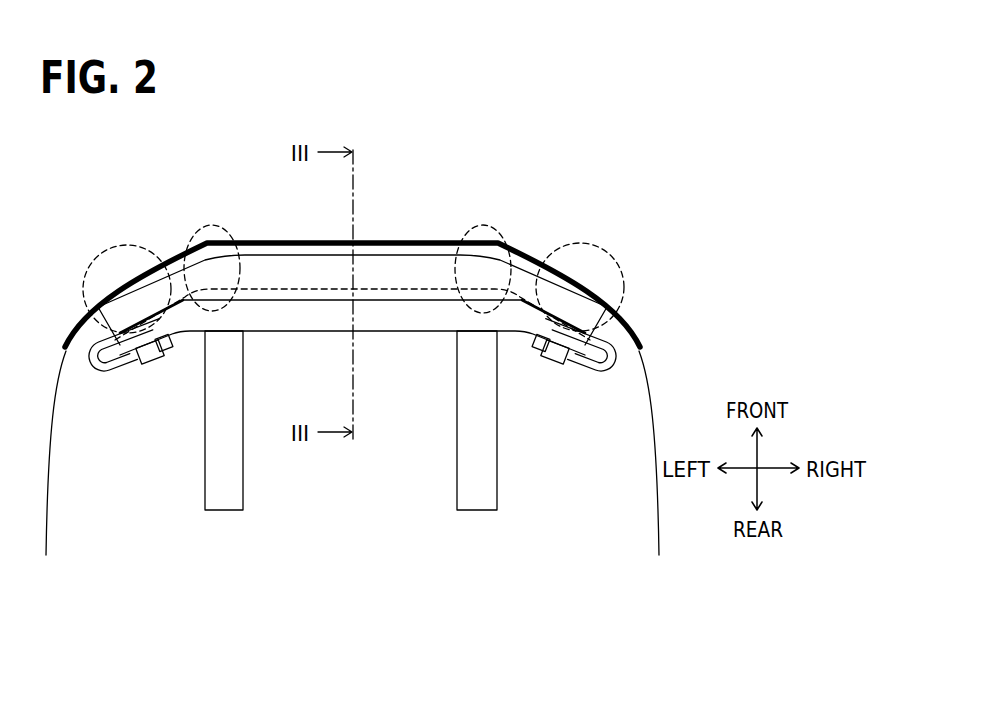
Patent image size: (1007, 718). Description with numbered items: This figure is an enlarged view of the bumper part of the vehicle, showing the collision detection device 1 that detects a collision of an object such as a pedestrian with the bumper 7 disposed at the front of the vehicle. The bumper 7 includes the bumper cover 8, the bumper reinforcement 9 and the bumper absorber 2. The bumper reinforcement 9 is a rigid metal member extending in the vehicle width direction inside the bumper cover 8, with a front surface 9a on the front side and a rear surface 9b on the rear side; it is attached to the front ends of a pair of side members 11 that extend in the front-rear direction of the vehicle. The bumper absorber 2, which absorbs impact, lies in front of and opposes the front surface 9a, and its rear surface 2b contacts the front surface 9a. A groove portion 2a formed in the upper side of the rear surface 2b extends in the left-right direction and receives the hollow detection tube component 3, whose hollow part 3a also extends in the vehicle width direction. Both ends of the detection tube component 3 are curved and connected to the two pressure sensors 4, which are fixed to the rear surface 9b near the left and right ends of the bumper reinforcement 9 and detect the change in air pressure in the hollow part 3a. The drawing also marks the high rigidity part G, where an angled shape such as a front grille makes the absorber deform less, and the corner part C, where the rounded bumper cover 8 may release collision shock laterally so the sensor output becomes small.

The collision detection device 1 is at (711, 247).
The bumper absorber 2 is at (352, 296).
The groove portion 2a is at (433, 333).
The rear surface 2b is at (373, 302).
The detection tube component 3 is at (408, 238).
The hollow part 3a is at (390, 291).
The pressure sensor 4 is at (154, 361).
The bumper 7 is at (603, 270).
The bumper cover 8 is at (527, 259).
The bumper reinforcement 9 is at (352, 296).
The front surface 9a is at (253, 300).
The rear surface 9b is at (273, 333).
The side members 11 is at (223, 512).
The corner part C is at (128, 245).
The high rigidity part G is at (212, 225).